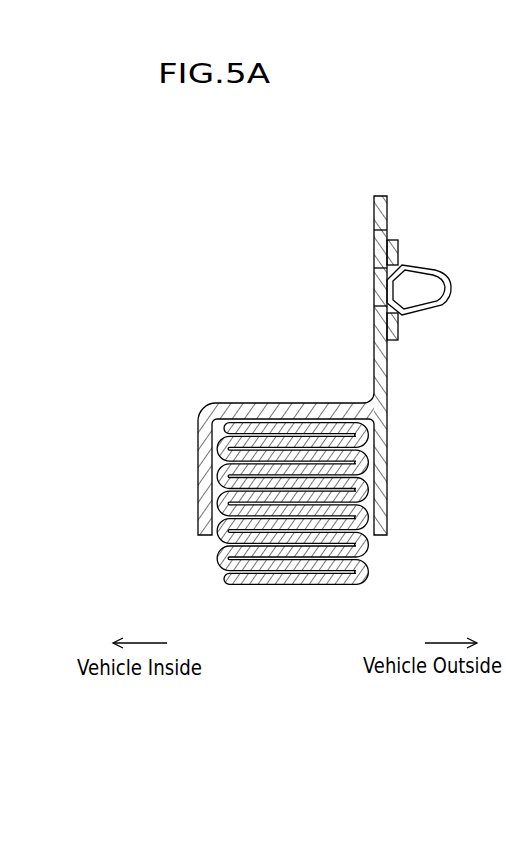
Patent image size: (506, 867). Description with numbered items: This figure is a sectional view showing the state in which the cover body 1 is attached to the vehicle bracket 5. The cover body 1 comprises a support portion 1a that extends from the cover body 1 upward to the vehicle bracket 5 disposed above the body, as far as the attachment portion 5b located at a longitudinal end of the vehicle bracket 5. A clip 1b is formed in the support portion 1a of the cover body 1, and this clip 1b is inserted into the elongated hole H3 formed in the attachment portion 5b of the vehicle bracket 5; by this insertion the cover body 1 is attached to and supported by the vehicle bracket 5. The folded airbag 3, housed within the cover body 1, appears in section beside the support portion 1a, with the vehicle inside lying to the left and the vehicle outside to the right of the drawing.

The cover body 1 is at (240, 322).
The support portion 1a is at (375, 210).
The clip 1b is at (439, 314).
The airbag 3 is at (286, 571).
The attachment portion 5b is at (402, 245).
The vehicle bracket 5 is at (440, 268).
The elongated hole H3 is at (412, 277).